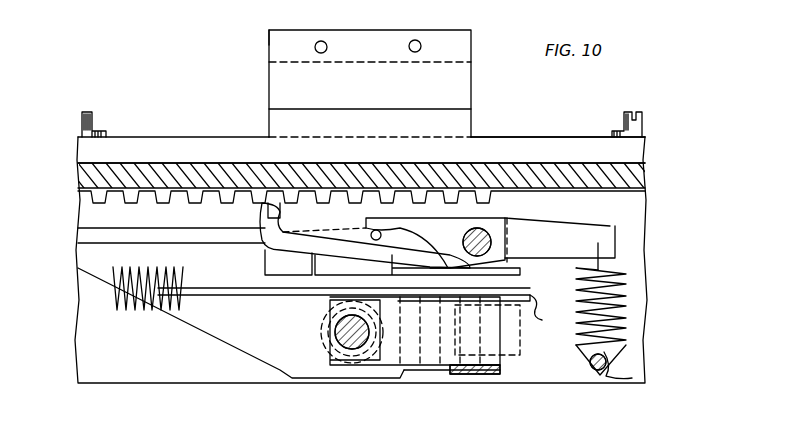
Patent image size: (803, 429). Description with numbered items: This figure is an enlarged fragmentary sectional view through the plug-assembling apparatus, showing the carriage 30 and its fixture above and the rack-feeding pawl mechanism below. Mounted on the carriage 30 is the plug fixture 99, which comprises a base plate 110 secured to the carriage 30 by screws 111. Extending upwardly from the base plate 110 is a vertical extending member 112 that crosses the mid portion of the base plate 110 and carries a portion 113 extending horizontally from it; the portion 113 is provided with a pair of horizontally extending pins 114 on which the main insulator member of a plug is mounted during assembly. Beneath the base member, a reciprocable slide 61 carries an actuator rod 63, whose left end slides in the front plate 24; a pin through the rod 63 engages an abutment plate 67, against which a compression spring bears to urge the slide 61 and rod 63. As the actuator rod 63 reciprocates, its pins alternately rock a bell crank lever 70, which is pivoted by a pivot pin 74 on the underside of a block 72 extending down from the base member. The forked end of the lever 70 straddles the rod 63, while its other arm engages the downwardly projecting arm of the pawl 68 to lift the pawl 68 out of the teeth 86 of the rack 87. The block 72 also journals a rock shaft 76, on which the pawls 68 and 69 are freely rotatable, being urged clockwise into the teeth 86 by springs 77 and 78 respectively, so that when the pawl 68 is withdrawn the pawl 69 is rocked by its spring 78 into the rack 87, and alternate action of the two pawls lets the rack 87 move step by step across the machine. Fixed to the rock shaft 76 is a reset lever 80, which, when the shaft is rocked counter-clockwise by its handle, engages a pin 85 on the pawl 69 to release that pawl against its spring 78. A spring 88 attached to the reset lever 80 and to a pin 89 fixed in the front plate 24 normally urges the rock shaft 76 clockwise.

The front plate 24 is at (553, 373).
The carriage 30 is at (650, 178).
The reciprocable slide 61 is at (332, 272).
The actuator rod 63 is at (352, 350).
The abutment plate 67 is at (245, 336).
The pawl 68 is at (263, 237).
The pawl 69 is at (272, 212).
The bell crank lever 70 is at (415, 366).
The block 72 is at (535, 314).
The pivot pin 74 is at (478, 375).
The rock shaft 76 is at (512, 228).
The spring 77 is at (172, 309).
The spring 78 is at (132, 309).
The reset lever 80 is at (612, 248).
The pin 85 is at (380, 231).
The teeth 86 is at (190, 196).
The rack 87 is at (80, 192).
The spring 88 is at (620, 298).
The pin 89 is at (605, 377).
The plug fixture 99 is at (492, 128).
The base plate 110 is at (543, 145).
The screws 111 is at (94, 119).
The vertical extending member 112 is at (470, 93).
The portion 113 is at (268, 45).
The pins 114 is at (327, 49).